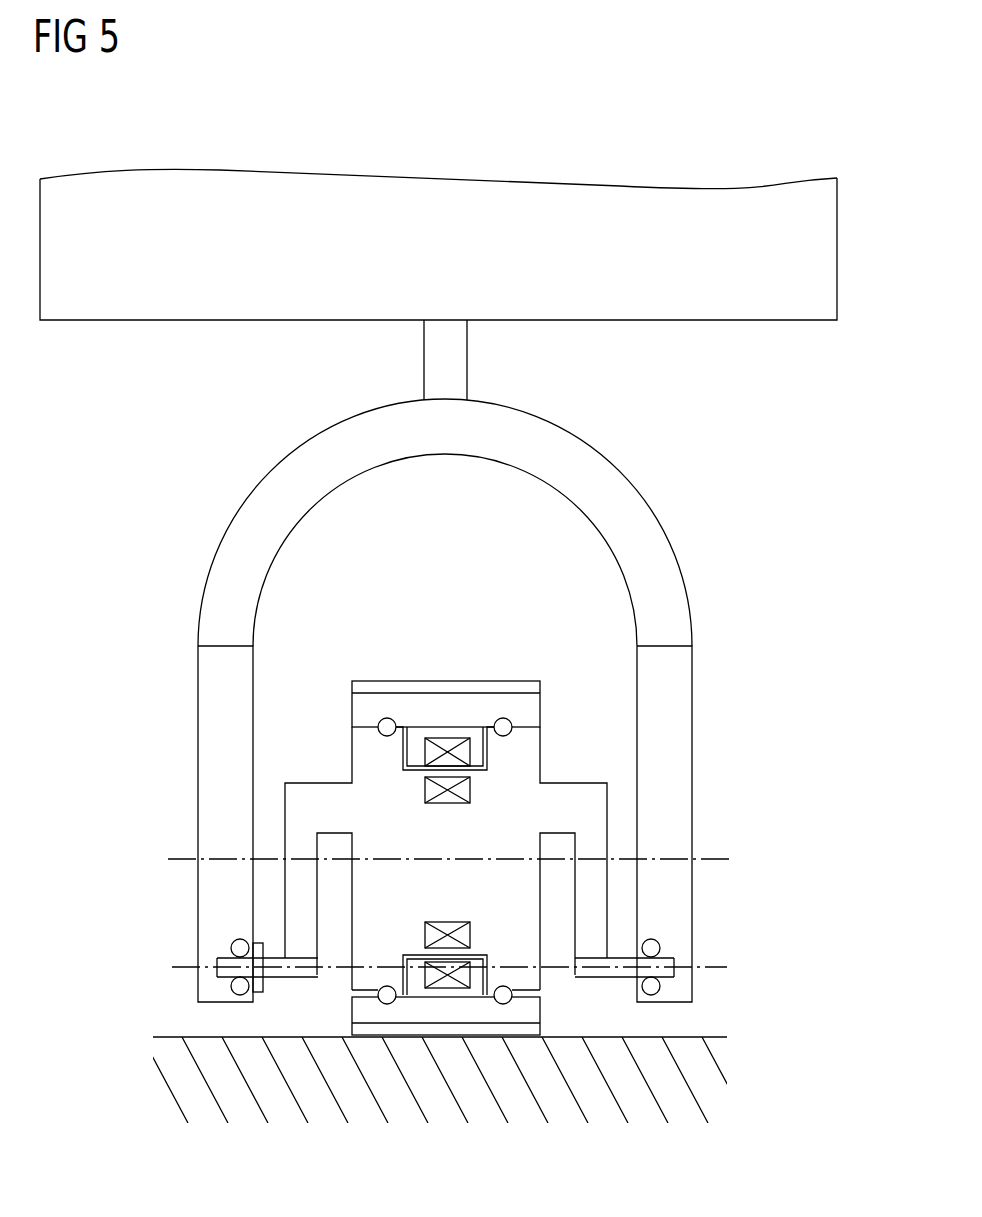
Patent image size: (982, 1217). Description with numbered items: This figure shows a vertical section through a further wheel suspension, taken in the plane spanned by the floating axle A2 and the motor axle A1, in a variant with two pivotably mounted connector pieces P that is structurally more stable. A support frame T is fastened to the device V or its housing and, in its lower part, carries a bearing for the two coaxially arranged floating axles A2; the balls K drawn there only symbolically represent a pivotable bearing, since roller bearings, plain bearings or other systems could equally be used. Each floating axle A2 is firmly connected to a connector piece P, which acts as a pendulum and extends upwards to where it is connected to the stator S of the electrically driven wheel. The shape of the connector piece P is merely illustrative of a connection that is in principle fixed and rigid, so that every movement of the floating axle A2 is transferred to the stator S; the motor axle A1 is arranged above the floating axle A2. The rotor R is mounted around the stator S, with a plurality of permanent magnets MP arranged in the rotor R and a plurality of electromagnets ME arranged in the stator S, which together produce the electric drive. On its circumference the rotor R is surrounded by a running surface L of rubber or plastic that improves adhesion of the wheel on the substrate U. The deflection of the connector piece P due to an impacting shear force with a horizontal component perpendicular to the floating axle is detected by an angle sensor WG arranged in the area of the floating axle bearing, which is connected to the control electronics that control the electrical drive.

The device V is at (635, 185).
The support frame T is at (198, 709).
The stator S is at (540, 752).
The rotor R is at (352, 709).
The running surface L is at (503, 681).
The permanent magnets MP is at (447, 738).
The electromagnets ME is at (425, 789).
The connector piece P is at (322, 947).
The balls K is at (232, 943).
The angle sensor WG is at (265, 988).
The motor axle A1 is at (718, 858).
The floating axle A2 is at (718, 966).
The substrate U is at (205, 1038).